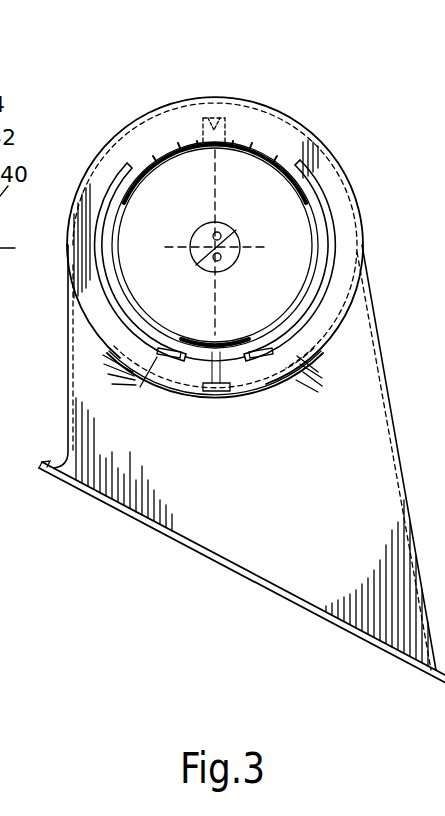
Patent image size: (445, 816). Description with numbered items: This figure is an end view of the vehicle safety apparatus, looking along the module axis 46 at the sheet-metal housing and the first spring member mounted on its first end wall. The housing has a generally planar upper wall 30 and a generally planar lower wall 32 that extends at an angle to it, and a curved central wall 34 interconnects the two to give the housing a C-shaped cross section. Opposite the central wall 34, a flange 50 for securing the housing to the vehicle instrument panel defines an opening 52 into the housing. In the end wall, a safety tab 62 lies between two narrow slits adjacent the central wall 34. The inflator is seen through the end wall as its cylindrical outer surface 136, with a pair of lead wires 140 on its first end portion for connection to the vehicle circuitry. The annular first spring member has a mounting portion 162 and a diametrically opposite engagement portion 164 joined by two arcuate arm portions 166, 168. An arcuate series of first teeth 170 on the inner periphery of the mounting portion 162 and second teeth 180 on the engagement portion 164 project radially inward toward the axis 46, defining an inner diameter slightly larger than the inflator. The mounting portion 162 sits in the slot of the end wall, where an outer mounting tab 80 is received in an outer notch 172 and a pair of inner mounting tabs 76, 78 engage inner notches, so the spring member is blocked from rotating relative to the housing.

The upper wall 30 is at (67, 425).
The lower wall 32 is at (385, 352).
The central wall 34 is at (135, 125).
The axis 46 is at (199, 256).
The flange 50 is at (443, 688).
The opening 52 is at (268, 596).
The safety tab 62 is at (219, 108).
The inner mounting tab 76 is at (300, 392).
The inner mounting tab 78 is at (141, 373).
The outer mounting tab 80 is at (221, 395).
The cylindrical outer surface 136 is at (237, 146).
The lead wires 140 is at (227, 250).
The mounting portion 162 is at (248, 373).
The engagement portion 164 is at (177, 128).
The arcuate arm portion 166 is at (90, 207).
The arcuate arm portion 168 is at (352, 233).
The first teeth 170 is at (247, 345).
The outer notch 172 is at (215, 393).
The second teeth 180 is at (275, 162).